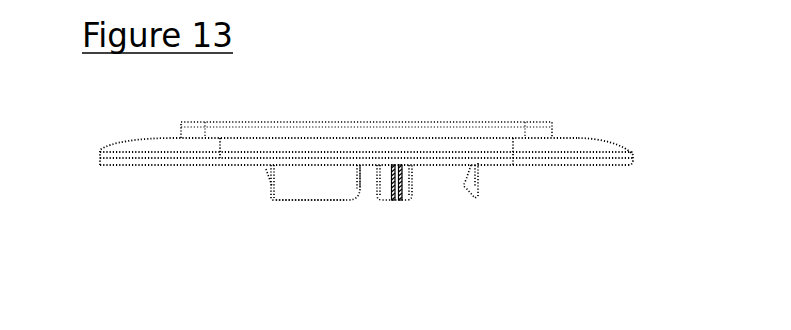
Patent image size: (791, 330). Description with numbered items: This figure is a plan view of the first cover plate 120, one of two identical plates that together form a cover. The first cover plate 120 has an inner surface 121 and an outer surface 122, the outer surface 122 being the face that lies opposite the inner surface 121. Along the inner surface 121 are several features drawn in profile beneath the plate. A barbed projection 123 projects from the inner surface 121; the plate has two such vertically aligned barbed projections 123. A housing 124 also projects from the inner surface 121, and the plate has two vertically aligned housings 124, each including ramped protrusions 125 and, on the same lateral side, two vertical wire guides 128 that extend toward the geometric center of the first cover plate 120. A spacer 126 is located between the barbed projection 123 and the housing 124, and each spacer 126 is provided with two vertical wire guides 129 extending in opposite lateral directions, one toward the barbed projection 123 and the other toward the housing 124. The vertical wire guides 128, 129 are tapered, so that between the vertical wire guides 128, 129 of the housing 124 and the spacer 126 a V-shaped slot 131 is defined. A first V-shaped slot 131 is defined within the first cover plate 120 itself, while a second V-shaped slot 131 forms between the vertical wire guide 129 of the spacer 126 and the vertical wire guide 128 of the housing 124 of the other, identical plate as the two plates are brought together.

The first cover plate 120 is at (100, 203).
The inner surface 121 is at (603, 162).
The outer surface 122 is at (512, 123).
The barbed projection 123 is at (475, 197).
The housing 124 is at (302, 183).
The ramped protrusion 125 is at (270, 176).
The spacer 126 is at (395, 200).
The vertical wire guide 128 is at (343, 180).
The vertical wire guide 129 is at (380, 185).
The V-shaped slot 131 is at (365, 190).